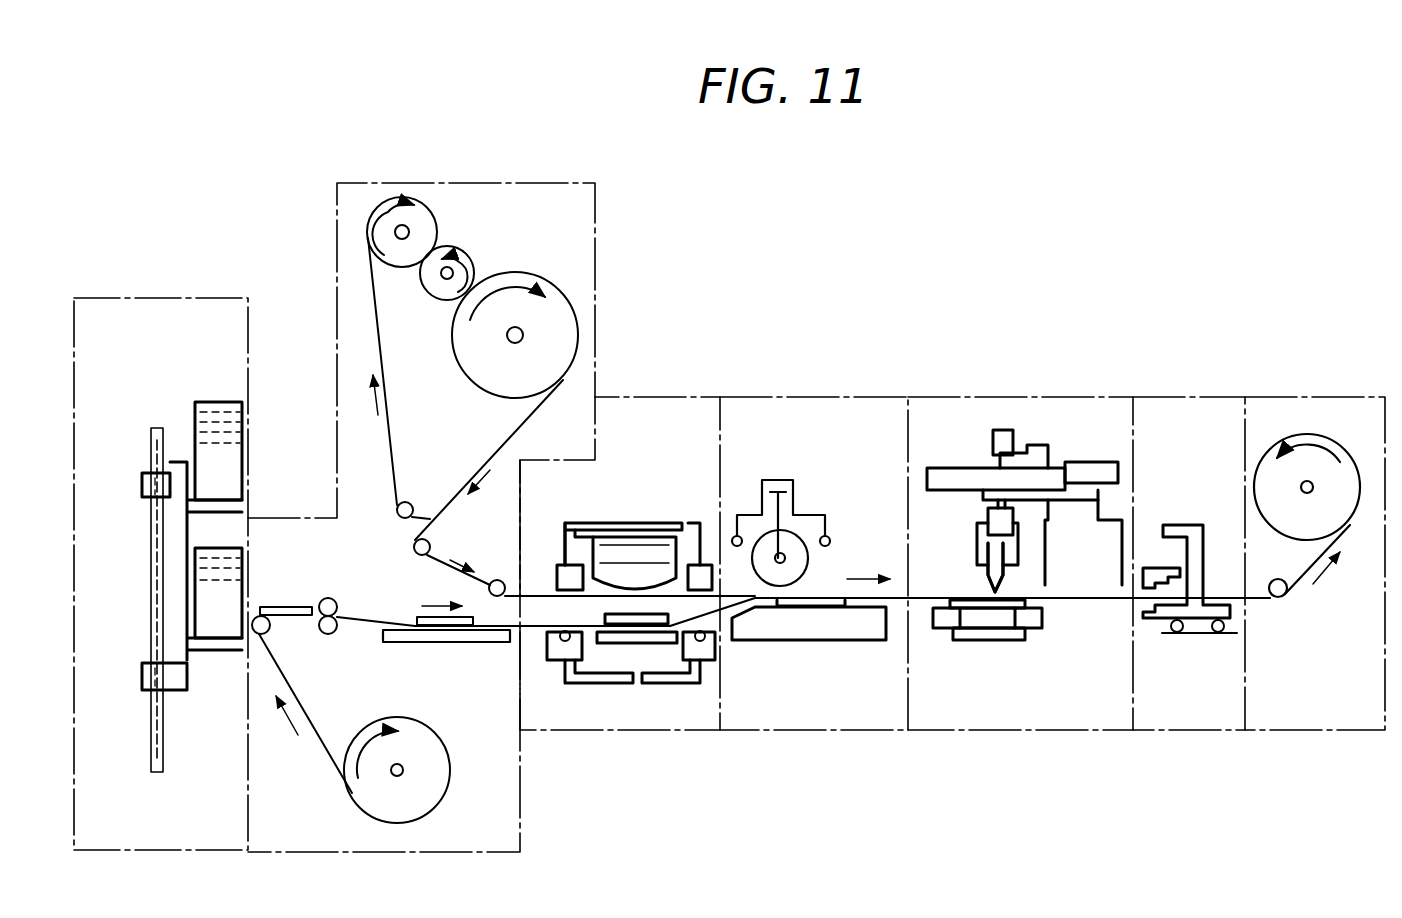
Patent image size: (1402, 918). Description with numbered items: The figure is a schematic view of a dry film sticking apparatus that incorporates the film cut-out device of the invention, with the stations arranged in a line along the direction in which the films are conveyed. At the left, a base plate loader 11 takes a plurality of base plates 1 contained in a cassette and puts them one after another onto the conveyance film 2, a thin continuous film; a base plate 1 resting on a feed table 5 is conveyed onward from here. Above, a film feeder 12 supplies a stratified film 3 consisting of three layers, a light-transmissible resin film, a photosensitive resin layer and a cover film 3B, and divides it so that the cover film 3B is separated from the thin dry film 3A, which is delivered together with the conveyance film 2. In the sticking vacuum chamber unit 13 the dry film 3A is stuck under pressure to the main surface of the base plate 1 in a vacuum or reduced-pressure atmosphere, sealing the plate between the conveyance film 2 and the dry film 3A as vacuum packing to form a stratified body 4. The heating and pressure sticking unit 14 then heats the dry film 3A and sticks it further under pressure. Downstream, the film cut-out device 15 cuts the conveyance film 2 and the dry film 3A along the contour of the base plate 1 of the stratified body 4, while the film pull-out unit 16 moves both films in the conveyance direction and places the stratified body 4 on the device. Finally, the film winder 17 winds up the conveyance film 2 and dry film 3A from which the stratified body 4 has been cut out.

The base plate 1 is at (284, 603).
The conveyance film 2 is at (305, 717).
The stratified film 3 is at (523, 423).
The dry film 3A is at (428, 567).
The cover film 3B is at (383, 368).
The stratified body 4 is at (975, 600).
The feed table 5 is at (452, 640).
The base plate loader 11 is at (172, 298).
The film feeder 12 is at (510, 183).
The sticking vacuum chamber unit 13 is at (692, 397).
The heating and pressure sticking unit 14 is at (810, 397).
The film cut-out device 15 is at (1012, 397).
The film pull-out unit 16 is at (1152, 397).
The film winder 17 is at (1342, 397).